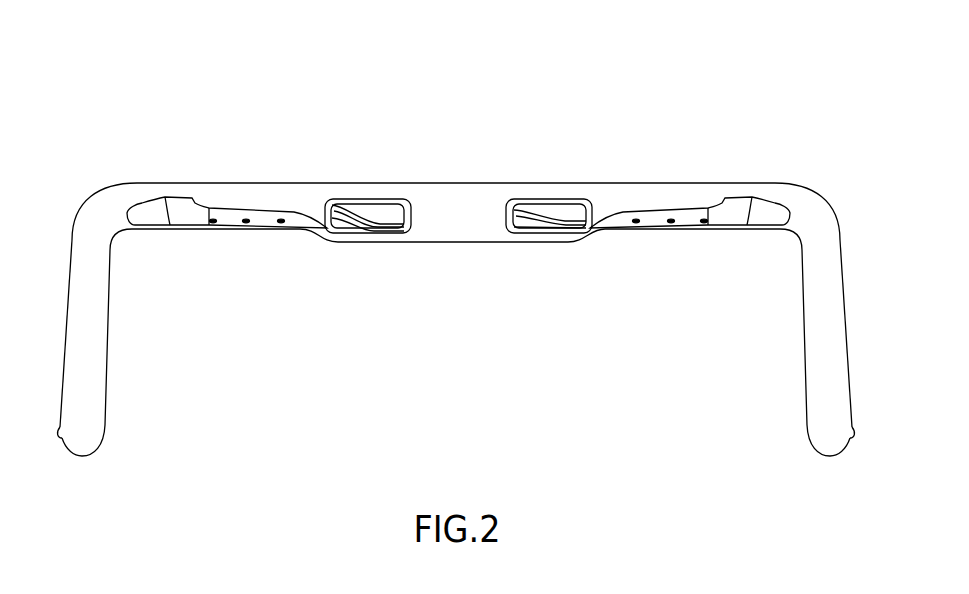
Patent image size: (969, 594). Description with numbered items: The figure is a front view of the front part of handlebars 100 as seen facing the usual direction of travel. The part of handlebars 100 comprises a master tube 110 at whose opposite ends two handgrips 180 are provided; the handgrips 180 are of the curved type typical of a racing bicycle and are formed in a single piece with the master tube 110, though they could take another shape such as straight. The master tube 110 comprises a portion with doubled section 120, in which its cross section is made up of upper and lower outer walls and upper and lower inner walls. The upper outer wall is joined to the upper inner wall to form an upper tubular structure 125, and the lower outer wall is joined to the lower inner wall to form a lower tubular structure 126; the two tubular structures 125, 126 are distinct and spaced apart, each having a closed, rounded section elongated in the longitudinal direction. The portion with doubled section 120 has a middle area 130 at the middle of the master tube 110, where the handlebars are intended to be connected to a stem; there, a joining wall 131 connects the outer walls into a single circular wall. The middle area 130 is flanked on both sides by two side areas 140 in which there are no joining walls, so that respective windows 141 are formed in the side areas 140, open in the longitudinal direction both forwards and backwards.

The part of handlebars 100 is at (527, 412).
The master tube 110 is at (205, 189).
The portion with doubled section 120 is at (527, 95).
The upper tubular structure 125 is at (375, 188).
The lower tubular structure 126 is at (351, 227).
The middle area 130 is at (454, 172).
The joining wall 131 is at (453, 210).
The side area 140 is at (284, 170).
The window 141 is at (385, 210).
The handgrip 180 is at (97, 305).